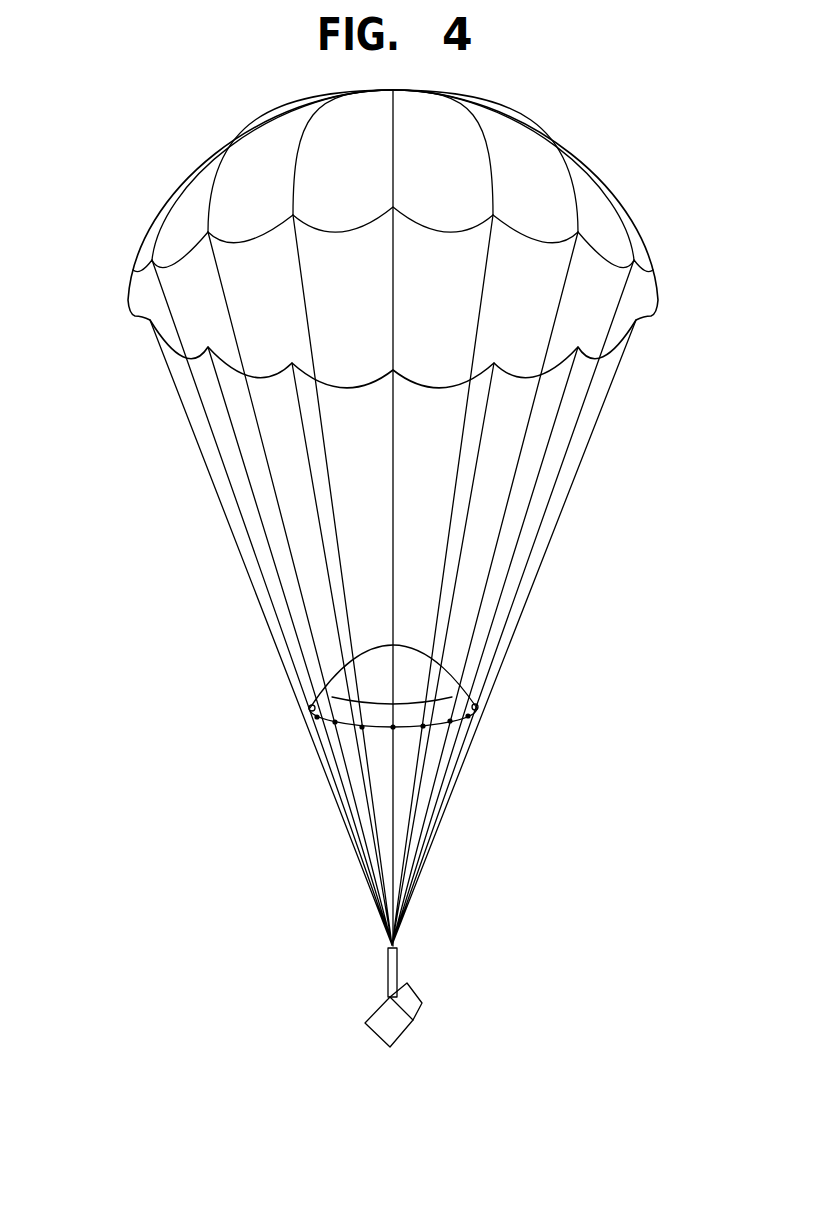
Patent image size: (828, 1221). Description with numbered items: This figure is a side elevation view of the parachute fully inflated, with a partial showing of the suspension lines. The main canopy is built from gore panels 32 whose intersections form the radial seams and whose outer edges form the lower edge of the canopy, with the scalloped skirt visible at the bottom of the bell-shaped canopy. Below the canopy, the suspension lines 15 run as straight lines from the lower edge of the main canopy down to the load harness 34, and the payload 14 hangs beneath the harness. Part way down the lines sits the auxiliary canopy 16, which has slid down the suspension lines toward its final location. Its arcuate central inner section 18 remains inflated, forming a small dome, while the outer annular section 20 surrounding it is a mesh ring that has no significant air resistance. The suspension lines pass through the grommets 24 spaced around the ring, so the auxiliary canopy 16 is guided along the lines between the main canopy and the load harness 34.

The gore panels 32 is at (237, 207).
The suspension lines 15 is at (581, 467).
The auxiliary canopy 16 is at (390, 711).
The central inner section 18 is at (417, 672).
The outer annular section 20 is at (445, 709).
The grommets 24 is at (427, 730).
The load harness 34 is at (397, 968).
The payload 14 is at (393, 1030).